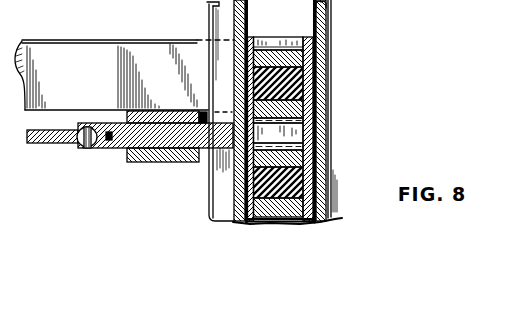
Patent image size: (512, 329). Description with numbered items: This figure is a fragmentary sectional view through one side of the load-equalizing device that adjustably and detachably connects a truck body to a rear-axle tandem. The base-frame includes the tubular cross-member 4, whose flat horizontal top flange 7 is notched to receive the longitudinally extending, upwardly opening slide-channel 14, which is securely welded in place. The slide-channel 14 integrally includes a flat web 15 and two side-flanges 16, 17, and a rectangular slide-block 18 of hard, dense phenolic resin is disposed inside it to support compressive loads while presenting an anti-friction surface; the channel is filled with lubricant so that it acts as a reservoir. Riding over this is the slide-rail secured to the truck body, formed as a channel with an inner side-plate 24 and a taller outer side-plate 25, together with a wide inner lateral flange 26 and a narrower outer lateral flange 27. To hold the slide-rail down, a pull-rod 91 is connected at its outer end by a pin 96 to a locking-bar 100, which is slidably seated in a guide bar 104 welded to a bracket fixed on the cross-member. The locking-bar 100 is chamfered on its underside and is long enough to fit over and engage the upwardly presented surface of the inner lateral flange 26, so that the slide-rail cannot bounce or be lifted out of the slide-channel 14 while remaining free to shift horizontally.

The top flange 7 is at (47, 55).
The cross-member 4 is at (95, 50).
The side-flange 16 is at (250, 36).
The side-flange 17 is at (322, 27).
The slide-block 18 is at (313, 78).
The flat web 15 is at (306, 120).
The slide-channel 14 is at (303, 135).
The outer side-plate 25 is at (326, 200).
The outer lateral flange 27 is at (337, 217).
The pull-rod 91 is at (58, 145).
The pin 96 is at (88, 150).
The locking-bar 100 is at (122, 150).
The guide bar 104 is at (172, 161).
The inner side-plate 24 is at (250, 204).
The inner lateral flange 26 is at (232, 211).